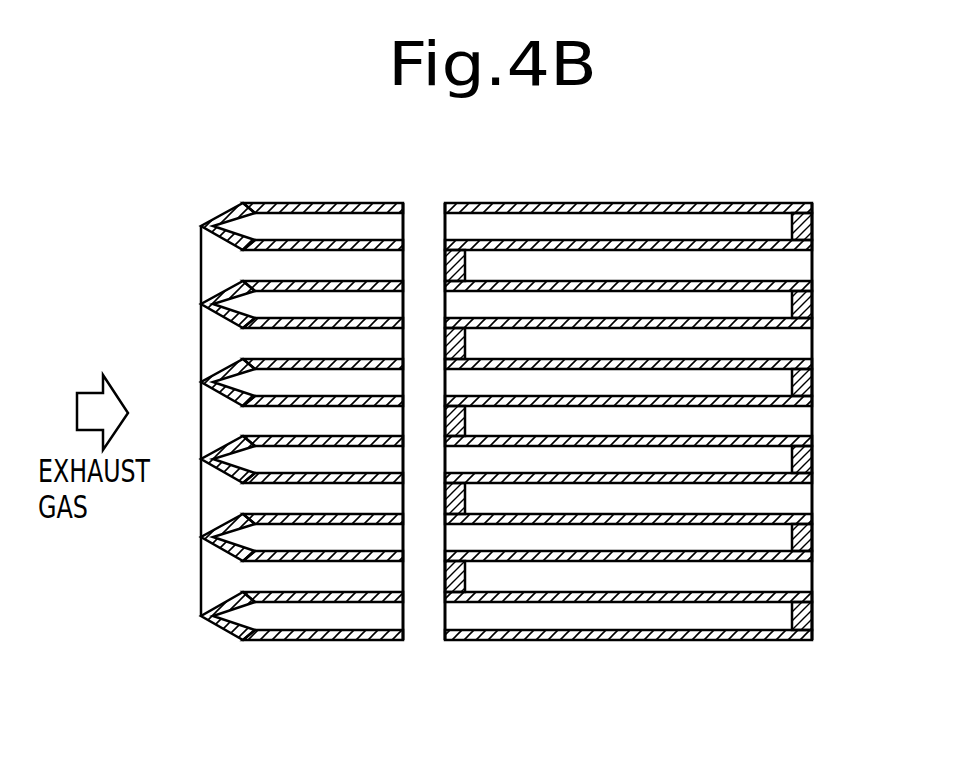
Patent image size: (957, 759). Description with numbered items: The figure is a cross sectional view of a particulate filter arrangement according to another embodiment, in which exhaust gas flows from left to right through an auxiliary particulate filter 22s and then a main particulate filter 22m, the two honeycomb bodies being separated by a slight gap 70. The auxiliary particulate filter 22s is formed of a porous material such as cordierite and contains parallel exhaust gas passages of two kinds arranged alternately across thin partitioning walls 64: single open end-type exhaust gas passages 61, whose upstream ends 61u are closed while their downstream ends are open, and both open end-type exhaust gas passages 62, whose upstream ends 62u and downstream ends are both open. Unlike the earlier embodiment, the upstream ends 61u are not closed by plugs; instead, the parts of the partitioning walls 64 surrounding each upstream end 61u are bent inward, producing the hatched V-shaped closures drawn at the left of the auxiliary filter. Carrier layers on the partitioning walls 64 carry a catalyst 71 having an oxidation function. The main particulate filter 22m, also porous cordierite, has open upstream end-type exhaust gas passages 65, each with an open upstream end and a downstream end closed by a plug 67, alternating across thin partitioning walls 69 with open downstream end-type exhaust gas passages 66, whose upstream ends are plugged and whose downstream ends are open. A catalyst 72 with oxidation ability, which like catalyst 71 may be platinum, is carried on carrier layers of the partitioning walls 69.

The auxiliary particulate filter 22s is at (380, 202).
The main particulate filter 22m is at (734, 202).
The single open end-type exhaust gas passage 61 is at (276, 303).
The upstream end of single open end-type exhaust gas passage 61u is at (232, 208).
The both open end-type exhaust gas passage 62 is at (263, 580).
The upstream end of both open end-type exhaust gas passage 62u is at (208, 583).
The partitioning wall 64 is at (282, 581).
The open upstream end-type exhaust gas passage 65 is at (738, 306).
The open downstream end-type exhaust gas passage 66 is at (780, 590).
The plug 67 is at (814, 304).
The partitioning wall 69 is at (713, 560).
The gap 70 is at (419, 643).
The catalyst 71 is at (334, 238).
The catalyst 72 is at (647, 233).